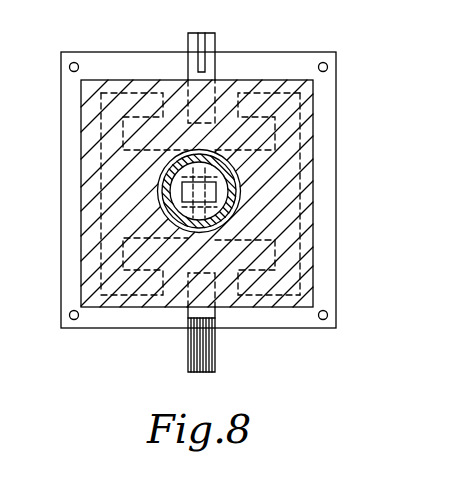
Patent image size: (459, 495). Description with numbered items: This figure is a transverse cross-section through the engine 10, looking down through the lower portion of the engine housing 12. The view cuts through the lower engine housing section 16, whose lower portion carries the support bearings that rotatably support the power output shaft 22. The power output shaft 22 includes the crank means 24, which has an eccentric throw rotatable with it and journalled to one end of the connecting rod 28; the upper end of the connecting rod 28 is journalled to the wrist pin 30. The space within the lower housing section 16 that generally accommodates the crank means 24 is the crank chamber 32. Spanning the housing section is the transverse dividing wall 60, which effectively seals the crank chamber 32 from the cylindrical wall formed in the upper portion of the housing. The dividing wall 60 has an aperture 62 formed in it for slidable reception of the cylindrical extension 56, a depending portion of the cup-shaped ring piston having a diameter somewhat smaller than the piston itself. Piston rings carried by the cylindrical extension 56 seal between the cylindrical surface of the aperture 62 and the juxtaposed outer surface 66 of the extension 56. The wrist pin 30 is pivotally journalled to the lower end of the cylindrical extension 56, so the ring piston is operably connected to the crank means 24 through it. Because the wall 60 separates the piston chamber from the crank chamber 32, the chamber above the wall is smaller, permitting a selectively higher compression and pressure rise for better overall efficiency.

The engine 10 is at (212, 202).
The engine housing 12 is at (258, 81).
The lower engine housing section 16 is at (121, 80).
The power output shaft 22 is at (188, 349).
The crank means 24 is at (123, 131).
The connecting rod 28 is at (217, 189).
The wrist pin 30 is at (158, 183).
The crank chamber 32 is at (104, 240).
The cylindrical extension 56 is at (162, 200).
The transverse dividing wall 60 is at (290, 280).
The aperture 62 is at (181, 167).
The outer surface 66 is at (236, 213).